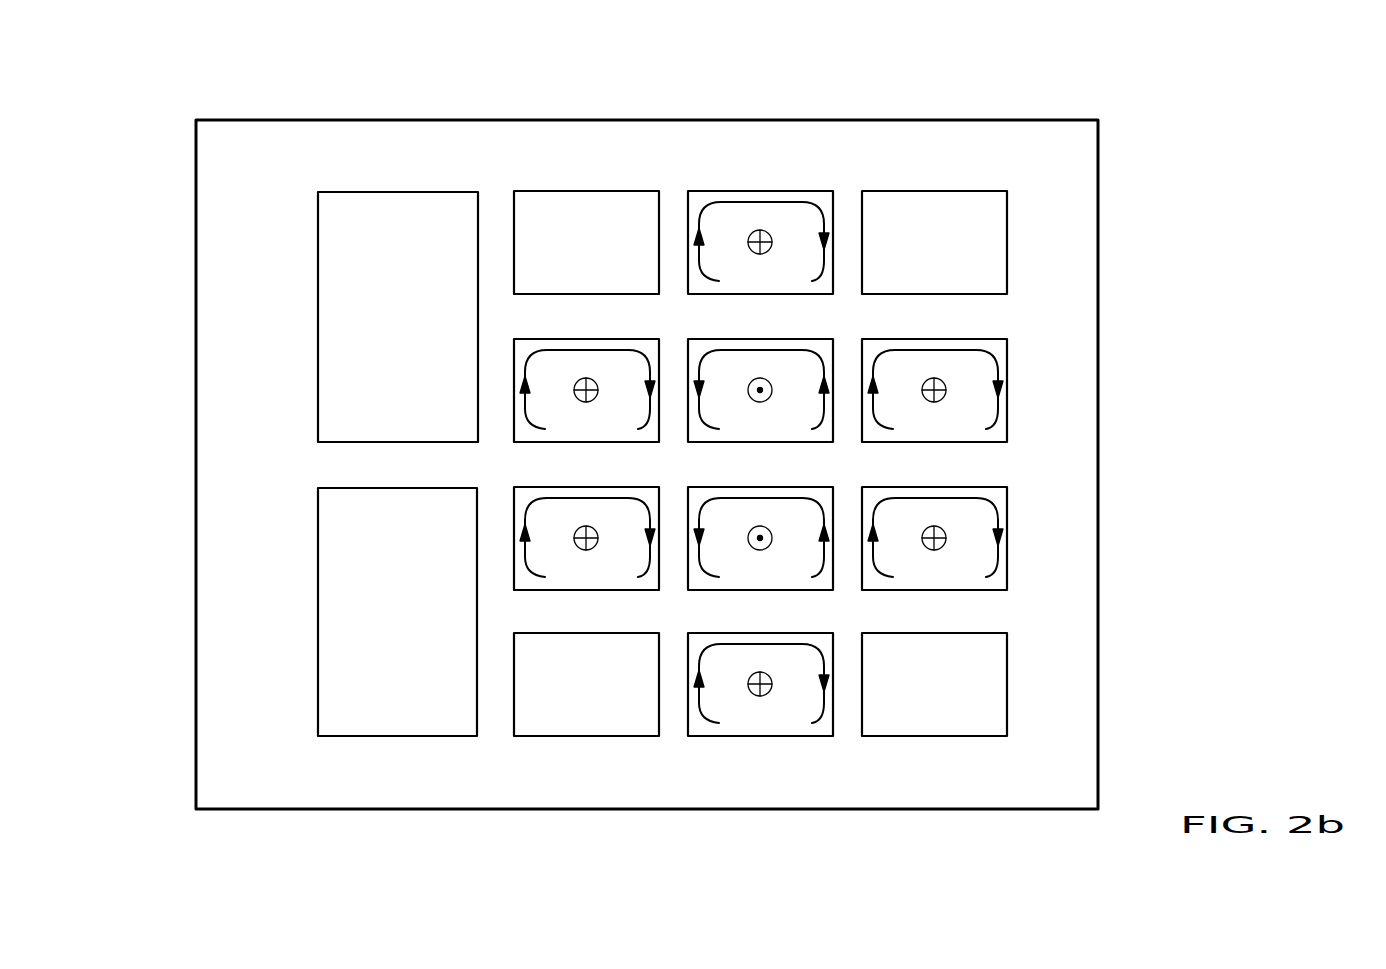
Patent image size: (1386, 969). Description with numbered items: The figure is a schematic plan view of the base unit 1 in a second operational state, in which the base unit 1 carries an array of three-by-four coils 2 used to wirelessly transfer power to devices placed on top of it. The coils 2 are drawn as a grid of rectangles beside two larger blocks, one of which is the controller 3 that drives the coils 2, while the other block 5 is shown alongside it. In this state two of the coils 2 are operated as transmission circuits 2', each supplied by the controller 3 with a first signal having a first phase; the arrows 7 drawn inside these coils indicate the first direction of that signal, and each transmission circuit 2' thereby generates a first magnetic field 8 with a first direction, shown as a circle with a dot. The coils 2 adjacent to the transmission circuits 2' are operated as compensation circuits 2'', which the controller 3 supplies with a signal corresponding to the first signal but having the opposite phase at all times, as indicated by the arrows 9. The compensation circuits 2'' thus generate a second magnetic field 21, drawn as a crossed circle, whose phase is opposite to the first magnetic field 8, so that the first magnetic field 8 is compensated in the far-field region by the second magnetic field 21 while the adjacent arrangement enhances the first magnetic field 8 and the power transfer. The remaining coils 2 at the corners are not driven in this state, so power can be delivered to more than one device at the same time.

The base unit 1 is at (254, 92).
The coil 2 is at (760, 465).
The transmission circuit 2' is at (760, 447).
The compensation circuit 2'' is at (761, 436).
The controller 3 is at (318, 610).
The block 5 is at (318, 315).
The arrows 7 is at (761, 454).
The first magnetic field 8 is at (770, 483).
The arrows 9 is at (761, 453).
The second magnetic field 21 is at (774, 482).